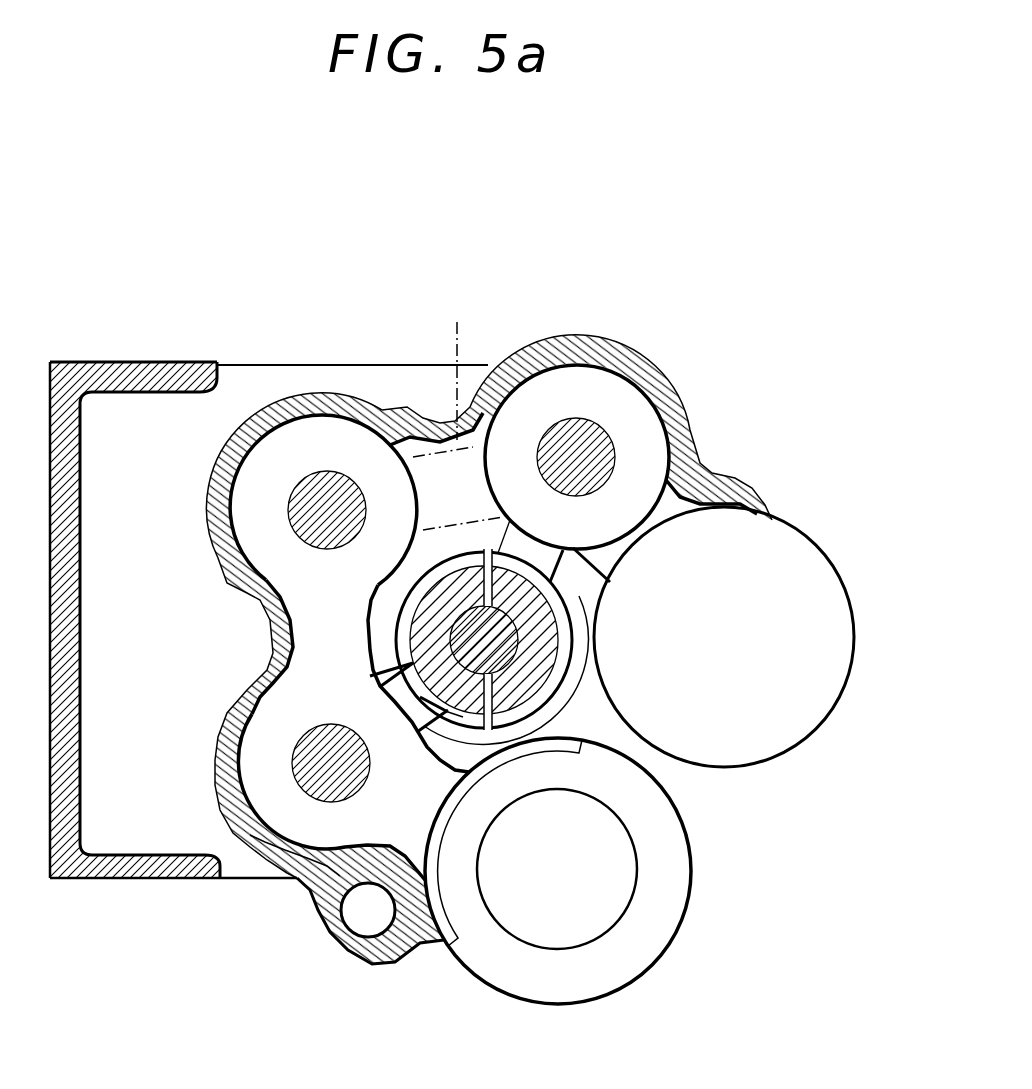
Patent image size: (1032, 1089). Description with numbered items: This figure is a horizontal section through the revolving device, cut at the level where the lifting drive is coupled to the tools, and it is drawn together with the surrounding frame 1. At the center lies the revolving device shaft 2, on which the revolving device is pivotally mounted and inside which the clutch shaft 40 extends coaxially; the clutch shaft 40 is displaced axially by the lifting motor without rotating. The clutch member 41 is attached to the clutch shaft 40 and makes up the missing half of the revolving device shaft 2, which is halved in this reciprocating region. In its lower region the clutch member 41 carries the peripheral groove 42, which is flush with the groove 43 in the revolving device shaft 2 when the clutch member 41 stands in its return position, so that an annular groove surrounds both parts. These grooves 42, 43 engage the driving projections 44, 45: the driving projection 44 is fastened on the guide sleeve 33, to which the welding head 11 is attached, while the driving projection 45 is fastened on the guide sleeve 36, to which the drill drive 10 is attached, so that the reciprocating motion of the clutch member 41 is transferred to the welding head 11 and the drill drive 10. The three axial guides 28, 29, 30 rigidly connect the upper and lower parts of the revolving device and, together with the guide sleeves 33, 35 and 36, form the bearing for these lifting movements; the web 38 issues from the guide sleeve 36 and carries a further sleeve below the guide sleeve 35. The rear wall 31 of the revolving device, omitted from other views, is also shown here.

The frame 1 is at (118, 383).
The revolving device shaft 2 is at (430, 615).
The drill drive 10 is at (812, 593).
The welding head 11 is at (653, 922).
The axial guide 28 is at (317, 763).
The axial guide 29 is at (596, 442).
The axial guide 30 is at (315, 510).
The rear wall 31 is at (250, 683).
The guide sleeve 33 is at (287, 820).
The guide sleeve 35 is at (273, 537).
The guide sleeve 36 is at (580, 388).
The web 38 is at (458, 406).
The clutch shaft 40 is at (478, 632).
The clutch member 41 is at (545, 676).
The peripheral groove 42 is at (562, 592).
The groove 43 is at (445, 755).
The driving projection 44 is at (427, 695).
The driving projection 45 is at (521, 552).